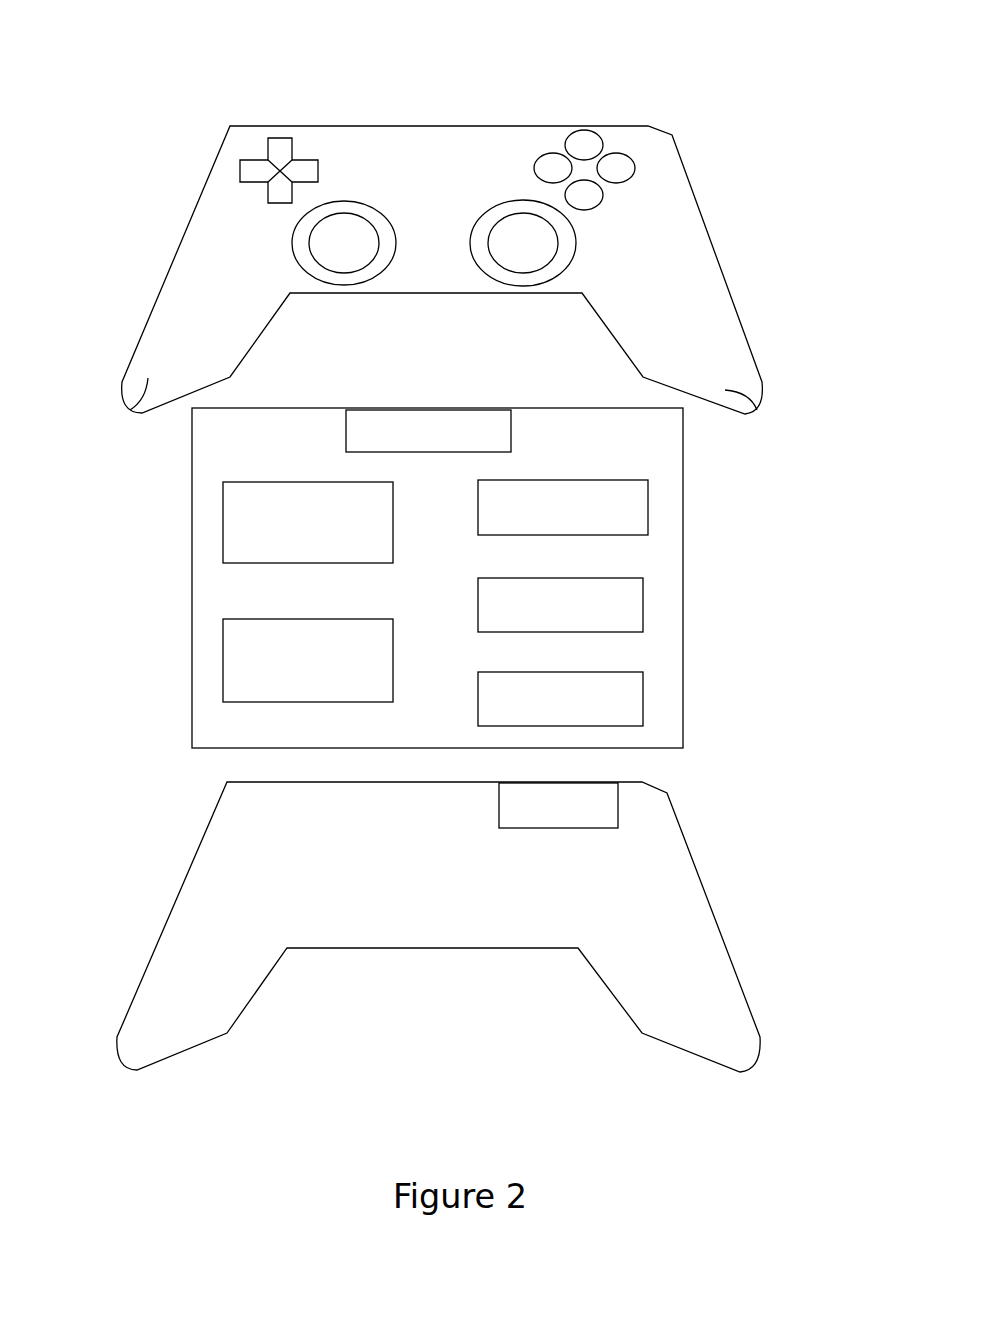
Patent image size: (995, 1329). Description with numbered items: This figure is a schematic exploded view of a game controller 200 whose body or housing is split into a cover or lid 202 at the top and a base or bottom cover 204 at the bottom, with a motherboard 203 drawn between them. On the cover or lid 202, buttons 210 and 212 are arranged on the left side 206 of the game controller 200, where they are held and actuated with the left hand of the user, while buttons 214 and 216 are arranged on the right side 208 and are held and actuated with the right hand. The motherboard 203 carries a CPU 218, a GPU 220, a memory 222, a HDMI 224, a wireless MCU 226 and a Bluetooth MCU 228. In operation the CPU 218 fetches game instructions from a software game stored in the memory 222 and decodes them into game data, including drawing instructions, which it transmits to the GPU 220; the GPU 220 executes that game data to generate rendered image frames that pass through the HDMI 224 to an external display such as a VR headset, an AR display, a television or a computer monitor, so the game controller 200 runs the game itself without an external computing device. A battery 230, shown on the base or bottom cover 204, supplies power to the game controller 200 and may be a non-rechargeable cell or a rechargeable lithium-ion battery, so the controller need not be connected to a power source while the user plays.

The game controller 200 is at (168, 80).
The cover or lid 202 is at (730, 245).
The motherboard 203 is at (721, 600).
The base or bottom cover 204 is at (718, 872).
The left side 206 is at (133, 413).
The right side 208 is at (757, 400).
The button 210 is at (265, 188).
The button 212 is at (300, 273).
The button 214 is at (602, 185).
The button 216 is at (578, 245).
The CPU 218 is at (276, 542).
The GPU 220 is at (542, 525).
The memory 222 is at (276, 678).
The HDMI 224 is at (402, 443).
The wireless MCU 226 is at (541, 622).
The Bluetooth MCU 228 is at (537, 715).
The battery 230 is at (543, 822).